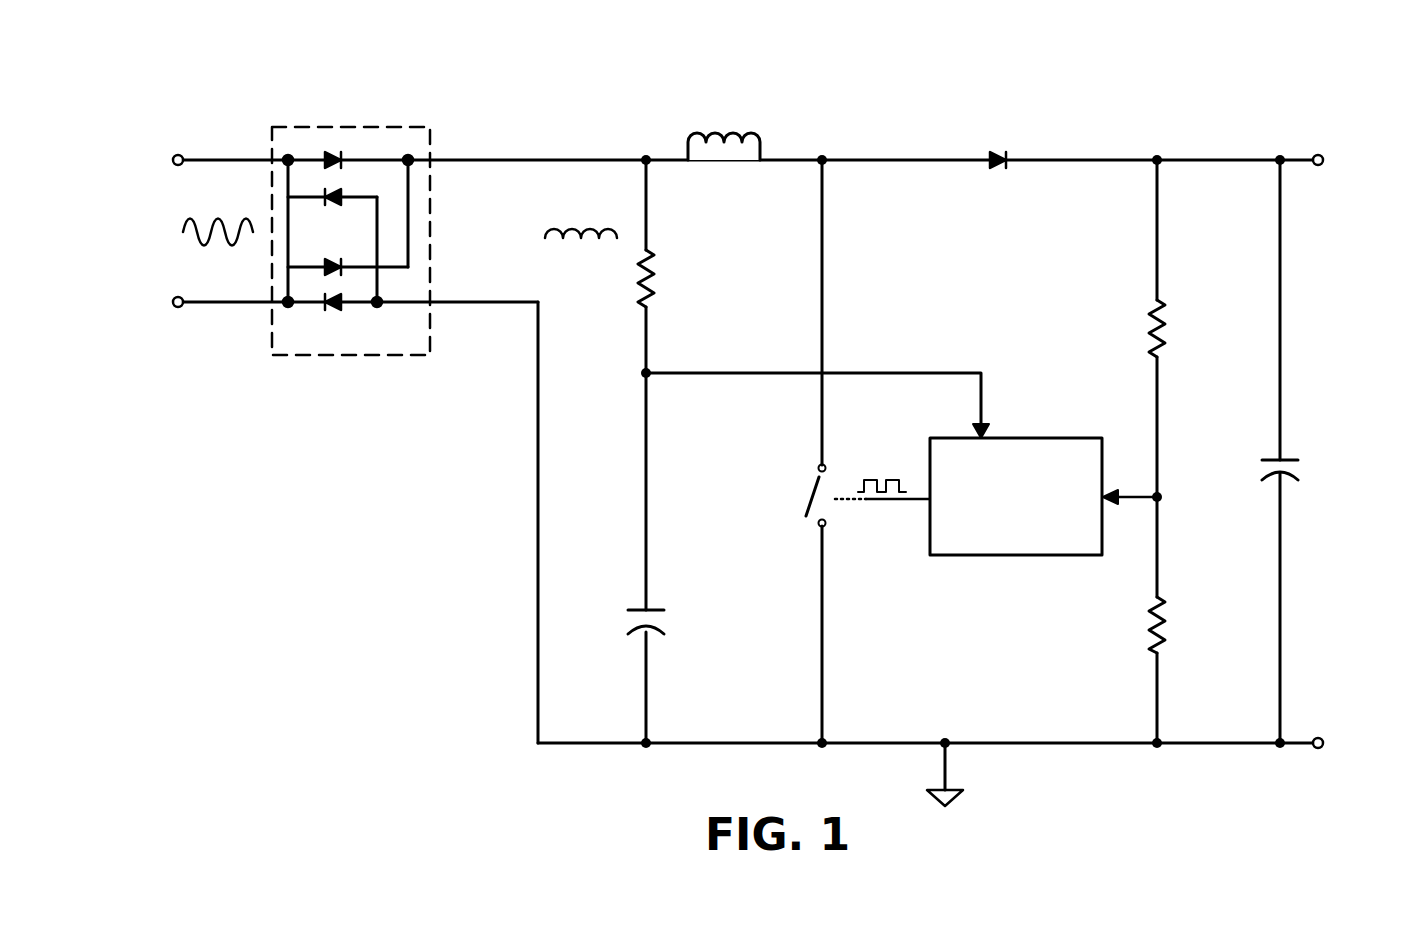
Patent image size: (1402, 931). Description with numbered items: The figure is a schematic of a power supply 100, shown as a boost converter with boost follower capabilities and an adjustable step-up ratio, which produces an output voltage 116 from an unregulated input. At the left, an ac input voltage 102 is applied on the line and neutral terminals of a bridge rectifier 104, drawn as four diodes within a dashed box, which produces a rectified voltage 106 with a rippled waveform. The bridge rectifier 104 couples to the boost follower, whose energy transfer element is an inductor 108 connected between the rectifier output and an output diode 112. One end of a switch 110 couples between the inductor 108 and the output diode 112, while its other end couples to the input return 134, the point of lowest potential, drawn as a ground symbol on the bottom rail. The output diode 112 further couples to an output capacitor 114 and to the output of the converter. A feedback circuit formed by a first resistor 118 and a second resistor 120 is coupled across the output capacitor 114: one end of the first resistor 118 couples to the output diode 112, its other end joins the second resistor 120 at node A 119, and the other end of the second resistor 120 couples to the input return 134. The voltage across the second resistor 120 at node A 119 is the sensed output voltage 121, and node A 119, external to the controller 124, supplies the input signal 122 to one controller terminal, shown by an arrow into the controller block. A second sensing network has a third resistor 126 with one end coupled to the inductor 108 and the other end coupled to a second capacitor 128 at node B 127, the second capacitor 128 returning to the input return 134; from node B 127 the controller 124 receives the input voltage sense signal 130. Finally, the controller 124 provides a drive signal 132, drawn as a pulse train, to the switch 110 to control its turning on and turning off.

The power supply 100 is at (725, 417).
The ac input voltage VAC 102 is at (151, 215).
The bridge rectifier 104 is at (312, 222).
The rectified voltage VRECT 106 is at (534, 235).
The inductor L1 108 is at (710, 132).
The switch S1 110 is at (778, 474).
The output diode D1 112 is at (1013, 124).
The output capacitor C1 114 is at (1251, 448).
The output voltage VO 116 is at (1356, 463).
The resistor R1 118 is at (1193, 310).
The node A 119 is at (1195, 526).
The resistor R2 120 is at (1127, 612).
The sensed output voltage VOSENSE 121 is at (1221, 632).
The input signal 122 is at (1130, 472).
The controller 124 is at (1016, 531).
The resistor R3 126 is at (685, 265).
The node B 127 is at (604, 399).
The capacitor C2 128 is at (638, 590).
The input voltage sense signal UINSENSE 130 is at (864, 350).
The drive signal 132 is at (882, 486).
The input return 134 is at (990, 772).